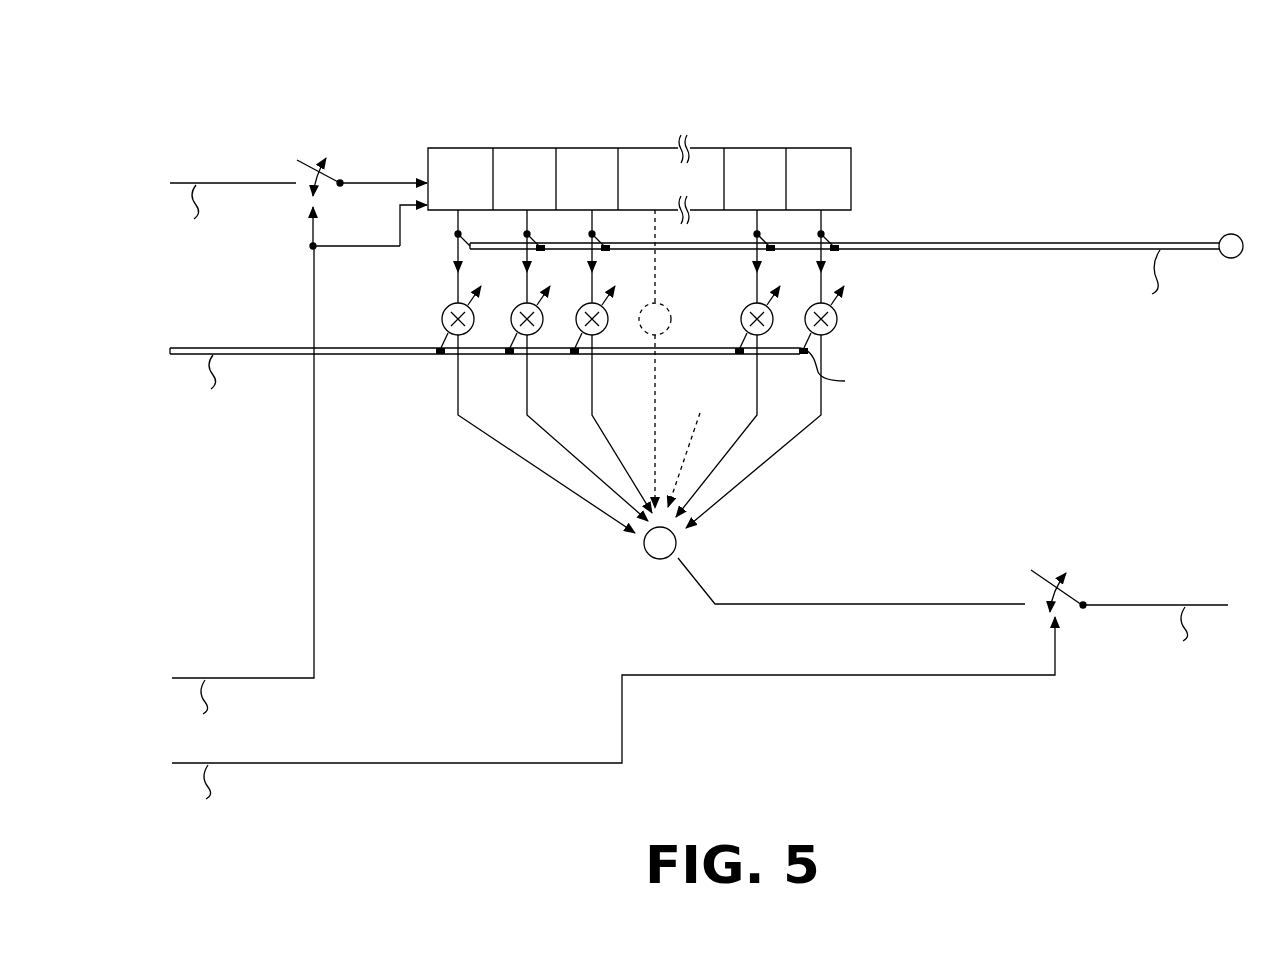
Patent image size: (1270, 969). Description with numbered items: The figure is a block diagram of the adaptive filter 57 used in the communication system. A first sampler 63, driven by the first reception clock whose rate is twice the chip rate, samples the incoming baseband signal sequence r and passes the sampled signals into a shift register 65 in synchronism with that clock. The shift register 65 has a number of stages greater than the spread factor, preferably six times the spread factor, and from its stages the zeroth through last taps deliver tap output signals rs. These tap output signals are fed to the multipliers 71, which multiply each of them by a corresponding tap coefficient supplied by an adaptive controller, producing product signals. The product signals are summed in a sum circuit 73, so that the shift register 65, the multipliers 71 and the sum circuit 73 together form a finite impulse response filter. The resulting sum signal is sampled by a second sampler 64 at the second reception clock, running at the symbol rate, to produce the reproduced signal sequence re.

The adaptive filter 57 is at (780, 93).
The first sampler 63 is at (323, 153).
The second sampler 64 is at (1059, 572).
The shift register 65 is at (618, 147).
The multipliers 71 is at (838, 318).
The sum circuit 73 is at (646, 555).